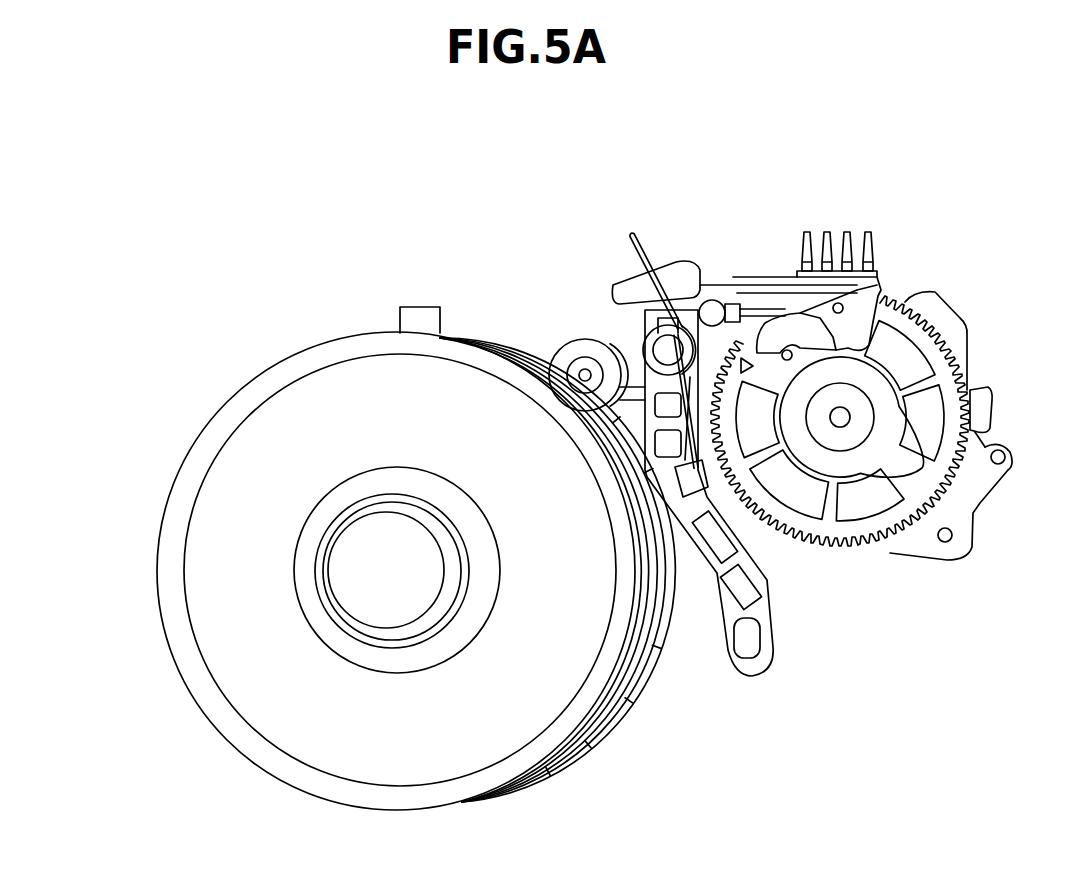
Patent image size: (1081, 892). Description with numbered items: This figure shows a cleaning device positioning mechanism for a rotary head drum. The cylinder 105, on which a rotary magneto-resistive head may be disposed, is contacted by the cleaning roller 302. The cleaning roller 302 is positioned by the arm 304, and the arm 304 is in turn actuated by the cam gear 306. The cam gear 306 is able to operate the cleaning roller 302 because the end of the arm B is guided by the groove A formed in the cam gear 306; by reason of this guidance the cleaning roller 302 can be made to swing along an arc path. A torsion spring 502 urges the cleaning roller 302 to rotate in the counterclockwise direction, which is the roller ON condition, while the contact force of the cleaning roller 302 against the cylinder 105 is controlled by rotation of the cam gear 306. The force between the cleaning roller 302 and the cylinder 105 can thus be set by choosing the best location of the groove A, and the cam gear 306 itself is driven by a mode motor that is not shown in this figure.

The cylinder 105 is at (310, 343).
The cleaning roller 302 is at (588, 345).
The arm 304 is at (717, 623).
The cam gear 306 is at (897, 303).
The torsion spring 502 is at (655, 245).
The groove A is at (875, 356).
The end of the arm B is at (830, 352).